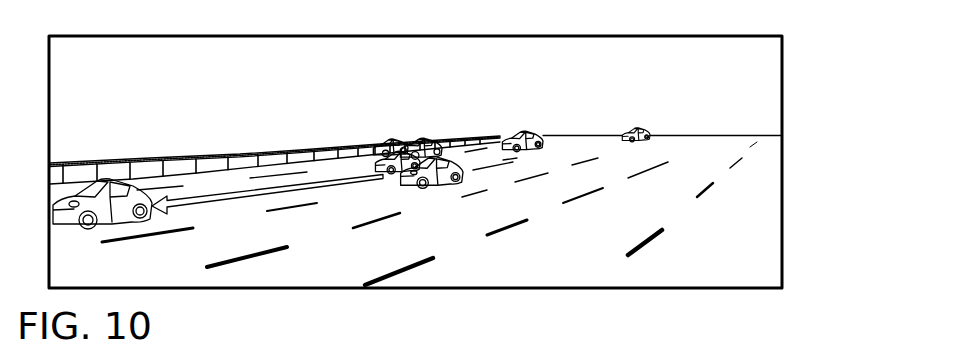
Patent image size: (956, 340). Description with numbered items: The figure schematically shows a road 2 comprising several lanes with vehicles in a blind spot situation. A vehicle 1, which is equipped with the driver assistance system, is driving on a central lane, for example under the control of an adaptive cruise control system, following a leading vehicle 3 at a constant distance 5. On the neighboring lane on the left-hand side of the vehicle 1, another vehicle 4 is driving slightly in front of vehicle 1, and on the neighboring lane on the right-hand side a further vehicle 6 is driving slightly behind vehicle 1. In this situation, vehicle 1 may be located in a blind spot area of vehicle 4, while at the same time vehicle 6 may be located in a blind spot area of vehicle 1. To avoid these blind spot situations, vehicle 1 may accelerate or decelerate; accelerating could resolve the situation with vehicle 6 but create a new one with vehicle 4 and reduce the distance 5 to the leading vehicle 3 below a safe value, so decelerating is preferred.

The vehicle 1 is at (417, 143).
The road 2 is at (718, 243).
The leading vehicle 3 is at (112, 205).
The another vehicle 4 is at (443, 170).
The constant distance 5 is at (278, 191).
The further vehicle 6 is at (380, 141).